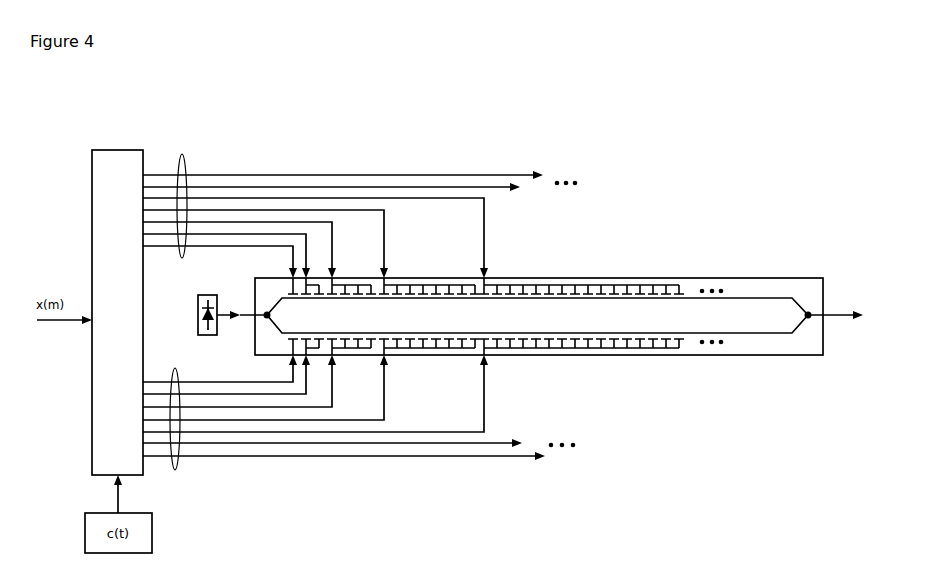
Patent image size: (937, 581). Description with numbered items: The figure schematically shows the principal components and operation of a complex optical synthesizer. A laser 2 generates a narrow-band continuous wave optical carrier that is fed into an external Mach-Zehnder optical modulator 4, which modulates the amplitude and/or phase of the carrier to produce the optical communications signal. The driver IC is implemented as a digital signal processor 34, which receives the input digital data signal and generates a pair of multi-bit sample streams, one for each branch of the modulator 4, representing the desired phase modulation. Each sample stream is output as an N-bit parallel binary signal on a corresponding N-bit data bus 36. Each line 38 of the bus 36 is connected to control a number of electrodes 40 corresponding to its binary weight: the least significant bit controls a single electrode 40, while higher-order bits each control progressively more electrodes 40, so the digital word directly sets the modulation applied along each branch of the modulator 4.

The laser 2 is at (209, 295).
The optical modulator 4 is at (758, 278).
The digital signal processor 34 is at (125, 297).
The N-bit data bus 36 is at (182, 153).
The line of the N-bit bus 38 is at (240, 175).
The electrodes 40 is at (290, 292).